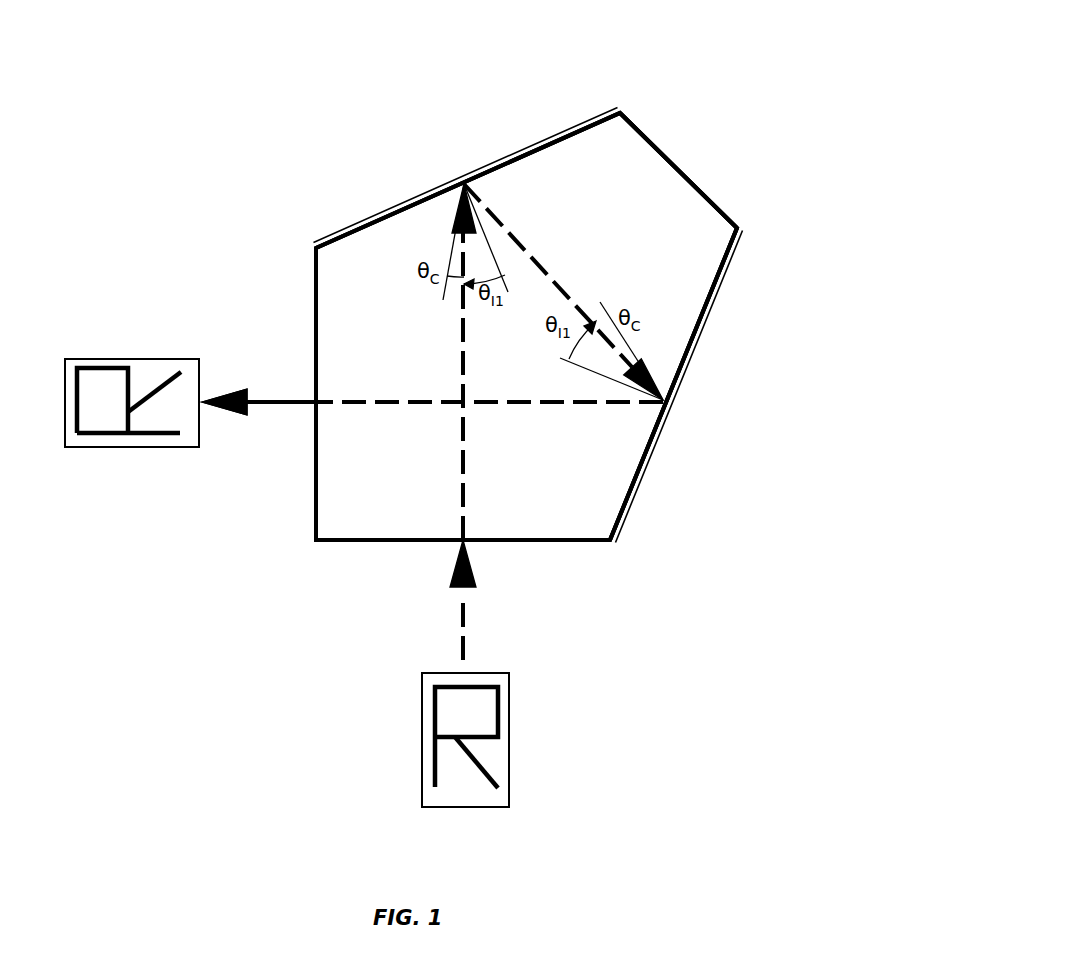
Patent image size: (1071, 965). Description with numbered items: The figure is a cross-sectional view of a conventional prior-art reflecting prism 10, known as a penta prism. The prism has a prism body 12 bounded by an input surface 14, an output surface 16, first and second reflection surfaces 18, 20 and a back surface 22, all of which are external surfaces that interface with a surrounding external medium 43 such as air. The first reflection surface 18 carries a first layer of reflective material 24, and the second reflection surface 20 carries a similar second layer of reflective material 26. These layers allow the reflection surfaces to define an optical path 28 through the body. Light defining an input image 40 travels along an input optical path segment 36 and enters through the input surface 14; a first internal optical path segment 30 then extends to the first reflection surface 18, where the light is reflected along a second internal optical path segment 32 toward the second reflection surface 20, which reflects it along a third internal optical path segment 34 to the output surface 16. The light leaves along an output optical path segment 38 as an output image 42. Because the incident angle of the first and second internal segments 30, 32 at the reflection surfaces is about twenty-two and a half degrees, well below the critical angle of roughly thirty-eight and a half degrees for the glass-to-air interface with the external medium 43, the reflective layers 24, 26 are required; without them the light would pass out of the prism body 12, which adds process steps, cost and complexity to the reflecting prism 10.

The reflecting prism 10 is at (668, 82).
The prism body 12 is at (633, 173).
The input surface 14 is at (365, 542).
The output surface 16 is at (315, 322).
The first reflection surface 18 is at (353, 237).
The second reflection surface 20 is at (700, 310).
The back surface 22 is at (692, 182).
The first layer of reflective material 24 is at (397, 205).
The second layer of reflective material 26 is at (692, 362).
The optical path 28 is at (478, 637).
The first internal optical path segment 30 is at (467, 495).
The second internal optical path segment 32 is at (548, 262).
The third internal optical path segment 34 is at (363, 405).
The input optical path segment 36 is at (467, 615).
The output optical path segment 38 is at (277, 405).
The input image 40 is at (420, 752).
The output image 42 is at (122, 447).
The external medium 43 is at (220, 208).